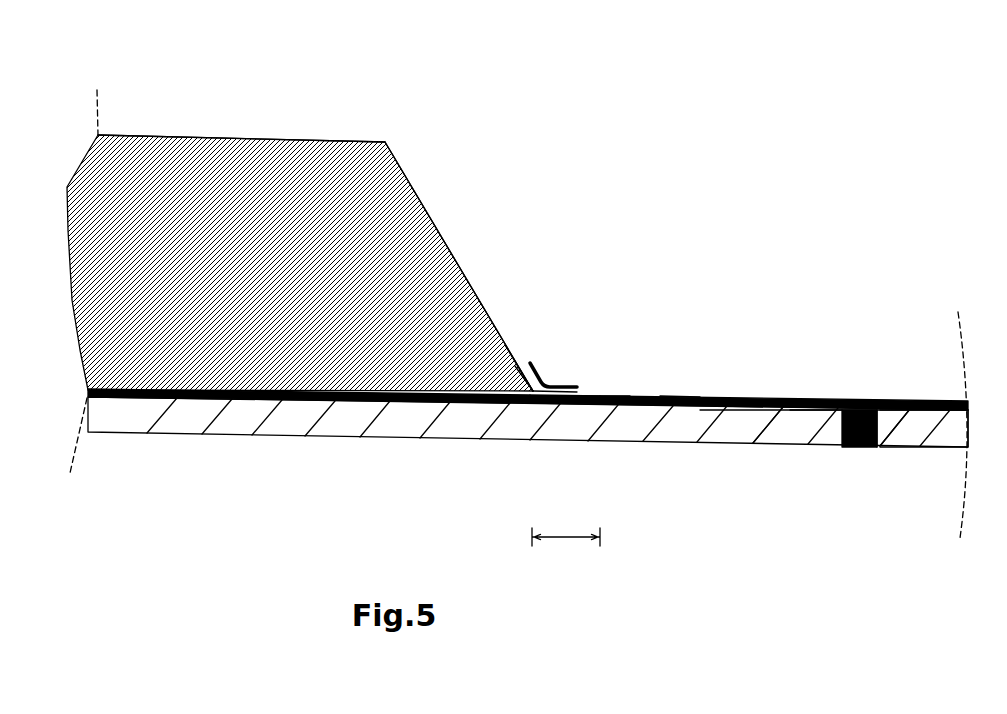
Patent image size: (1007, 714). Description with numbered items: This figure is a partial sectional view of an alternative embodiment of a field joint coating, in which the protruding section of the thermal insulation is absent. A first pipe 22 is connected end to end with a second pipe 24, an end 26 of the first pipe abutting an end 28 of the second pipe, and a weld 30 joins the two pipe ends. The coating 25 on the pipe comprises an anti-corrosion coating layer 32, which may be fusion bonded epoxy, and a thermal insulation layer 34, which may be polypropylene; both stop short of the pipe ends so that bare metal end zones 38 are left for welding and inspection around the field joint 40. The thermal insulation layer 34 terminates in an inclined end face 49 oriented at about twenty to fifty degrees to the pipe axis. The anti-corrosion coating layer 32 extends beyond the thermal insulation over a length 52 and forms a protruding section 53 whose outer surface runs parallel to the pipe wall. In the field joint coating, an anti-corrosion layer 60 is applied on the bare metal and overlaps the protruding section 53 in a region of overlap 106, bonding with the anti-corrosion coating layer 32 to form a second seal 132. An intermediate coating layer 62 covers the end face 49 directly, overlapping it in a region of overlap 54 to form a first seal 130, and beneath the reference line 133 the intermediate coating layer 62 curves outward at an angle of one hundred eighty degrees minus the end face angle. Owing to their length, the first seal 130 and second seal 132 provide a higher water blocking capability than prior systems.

The first pipe 22 is at (185, 412).
The second pipe 24 is at (912, 445).
The coating 25 is at (420, 123).
The end of the first pipe 26 is at (833, 408).
The end of the second pipe 28 is at (880, 412).
The weld 30 is at (853, 447).
The anti-corrosion coating layer 32 is at (262, 396).
The thermal insulation layer 34 is at (192, 178).
The end zones 38 is at (770, 470).
The field joint 40 is at (848, 245).
The inclined end face 49 is at (430, 217).
The length 52 is at (542, 537).
The protruding section of the anti-corrosion coating layer 53 is at (570, 405).
The region of overlap 54 is at (529, 317).
The anti-corrosion layer of the field joint coating 60 is at (686, 404).
The intermediate coating layer 62 is at (653, 392).
The region of overlap 106 is at (616, 368).
The first seal 130 is at (539, 337).
The second seal 132 is at (596, 340).
The reference line 133 is at (548, 363).